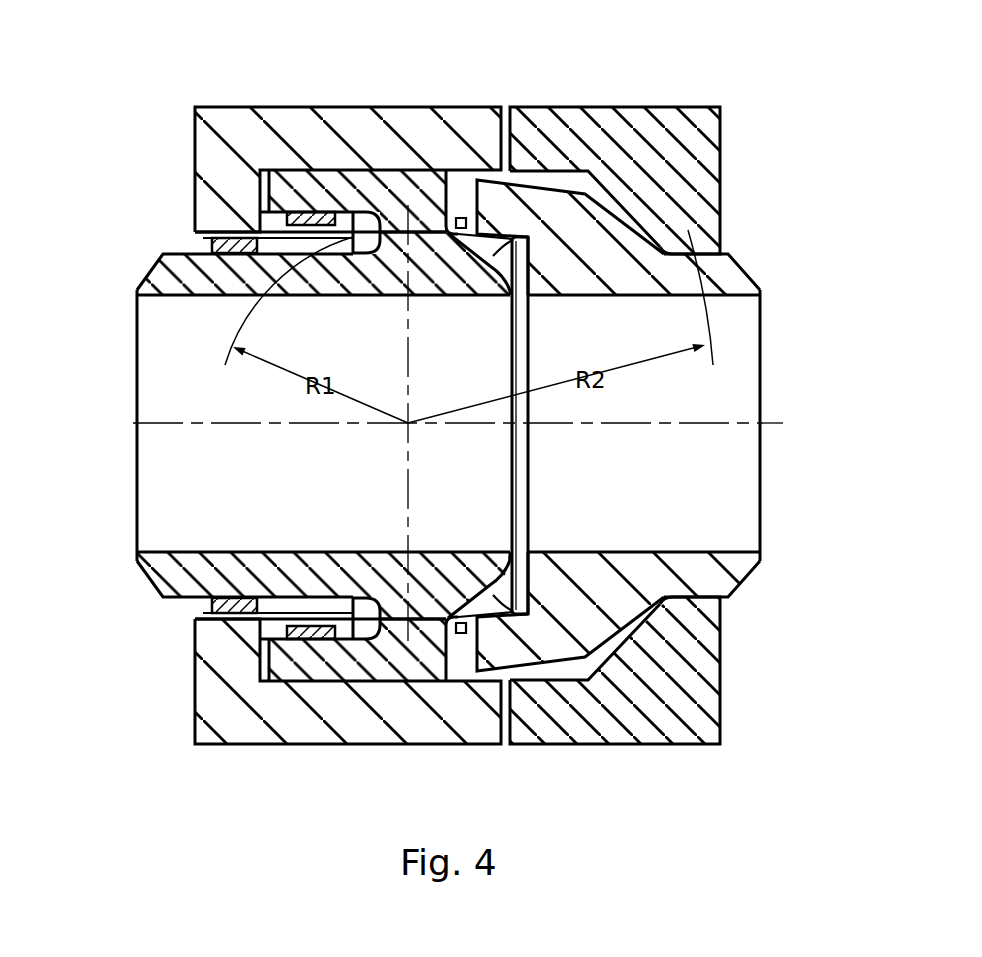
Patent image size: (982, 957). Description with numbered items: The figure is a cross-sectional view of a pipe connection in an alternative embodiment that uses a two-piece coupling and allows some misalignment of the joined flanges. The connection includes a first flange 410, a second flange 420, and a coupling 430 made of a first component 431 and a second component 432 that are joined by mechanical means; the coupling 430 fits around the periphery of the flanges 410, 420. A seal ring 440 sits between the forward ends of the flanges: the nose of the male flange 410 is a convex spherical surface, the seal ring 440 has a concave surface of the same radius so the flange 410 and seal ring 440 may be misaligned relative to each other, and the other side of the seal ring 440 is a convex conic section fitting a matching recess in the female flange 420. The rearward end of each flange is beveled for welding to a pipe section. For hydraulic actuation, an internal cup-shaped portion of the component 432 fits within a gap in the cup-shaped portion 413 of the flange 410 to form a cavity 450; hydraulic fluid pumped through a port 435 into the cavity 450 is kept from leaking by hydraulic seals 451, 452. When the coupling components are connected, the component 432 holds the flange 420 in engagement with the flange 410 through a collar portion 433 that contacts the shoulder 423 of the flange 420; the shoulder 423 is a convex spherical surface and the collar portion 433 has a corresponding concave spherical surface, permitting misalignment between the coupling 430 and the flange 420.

The first flange 410 is at (183, 300).
The cup-shaped portion 413 is at (290, 673).
The second flange 420 is at (666, 425).
The shoulder 423 is at (668, 243).
The coupling 430 is at (440, 403).
The first component 431 is at (398, 105).
The second component 432 is at (566, 438).
The collar portion 433 is at (632, 223).
The port 435 is at (228, 236).
The seal ring 440 is at (463, 216).
The cavity 450 is at (400, 618).
The hydraulic seal 451 is at (225, 620).
The hydraulic seal 452 is at (287, 620).